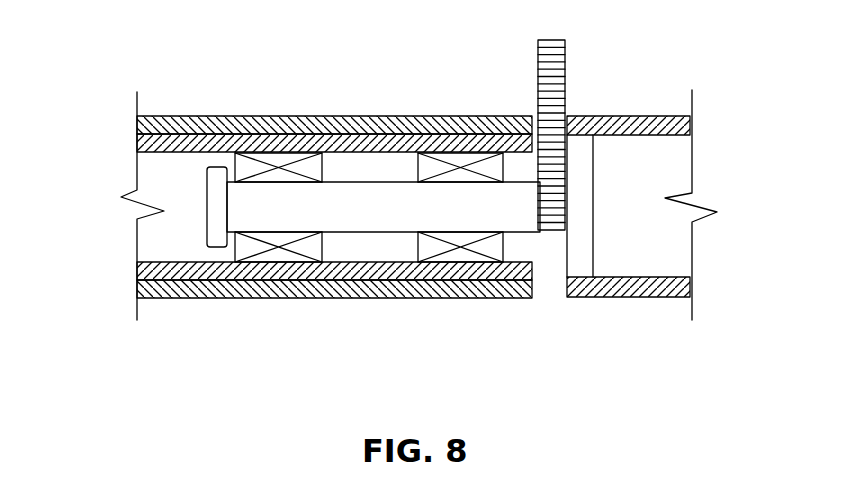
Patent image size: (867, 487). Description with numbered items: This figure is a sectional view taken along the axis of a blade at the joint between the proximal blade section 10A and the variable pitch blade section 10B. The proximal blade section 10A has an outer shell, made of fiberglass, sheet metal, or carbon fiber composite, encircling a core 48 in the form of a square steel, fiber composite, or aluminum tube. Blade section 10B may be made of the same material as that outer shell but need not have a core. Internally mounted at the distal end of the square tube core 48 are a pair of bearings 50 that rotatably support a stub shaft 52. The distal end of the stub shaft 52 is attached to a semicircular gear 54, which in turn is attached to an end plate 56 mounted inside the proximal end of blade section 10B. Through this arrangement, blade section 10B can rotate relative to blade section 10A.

The proximal blade section 10A is at (288, 181).
The blade section 10B is at (642, 197).
The core 48 is at (163, 262).
The bearings 50 is at (280, 253).
The stub shaft 52 is at (355, 190).
The semicircular gear 54 is at (552, 40).
The end plate 56 is at (582, 268).